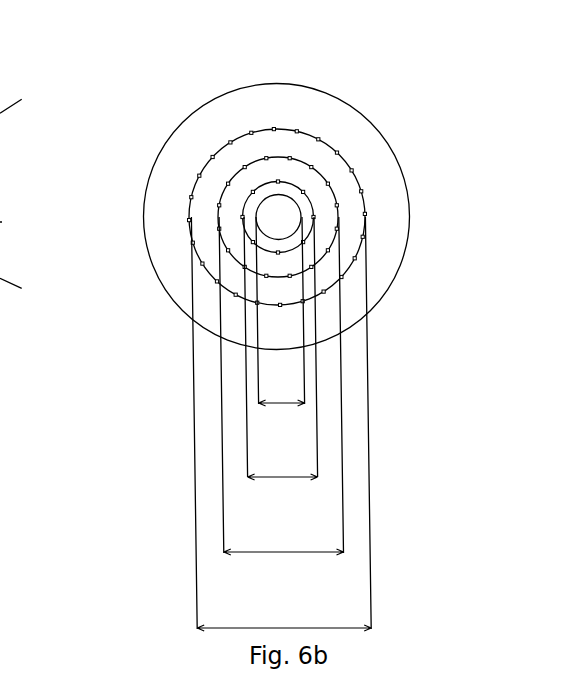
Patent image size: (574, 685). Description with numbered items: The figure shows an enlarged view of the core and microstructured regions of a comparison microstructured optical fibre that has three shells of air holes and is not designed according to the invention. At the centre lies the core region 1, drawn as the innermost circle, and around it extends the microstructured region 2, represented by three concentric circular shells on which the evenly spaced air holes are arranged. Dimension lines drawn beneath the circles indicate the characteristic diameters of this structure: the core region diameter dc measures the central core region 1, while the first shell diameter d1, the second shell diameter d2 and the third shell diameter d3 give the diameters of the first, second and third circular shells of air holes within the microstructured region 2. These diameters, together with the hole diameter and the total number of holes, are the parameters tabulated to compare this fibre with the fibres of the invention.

The core region 1 is at (275, 213).
The microstructured region 2 is at (203, 223).
The core region diameter dc is at (280, 311).
The first shell diameter d1 is at (281, 348).
The second shell diameter d2 is at (281, 386).
The third shell diameter d3 is at (281, 424).